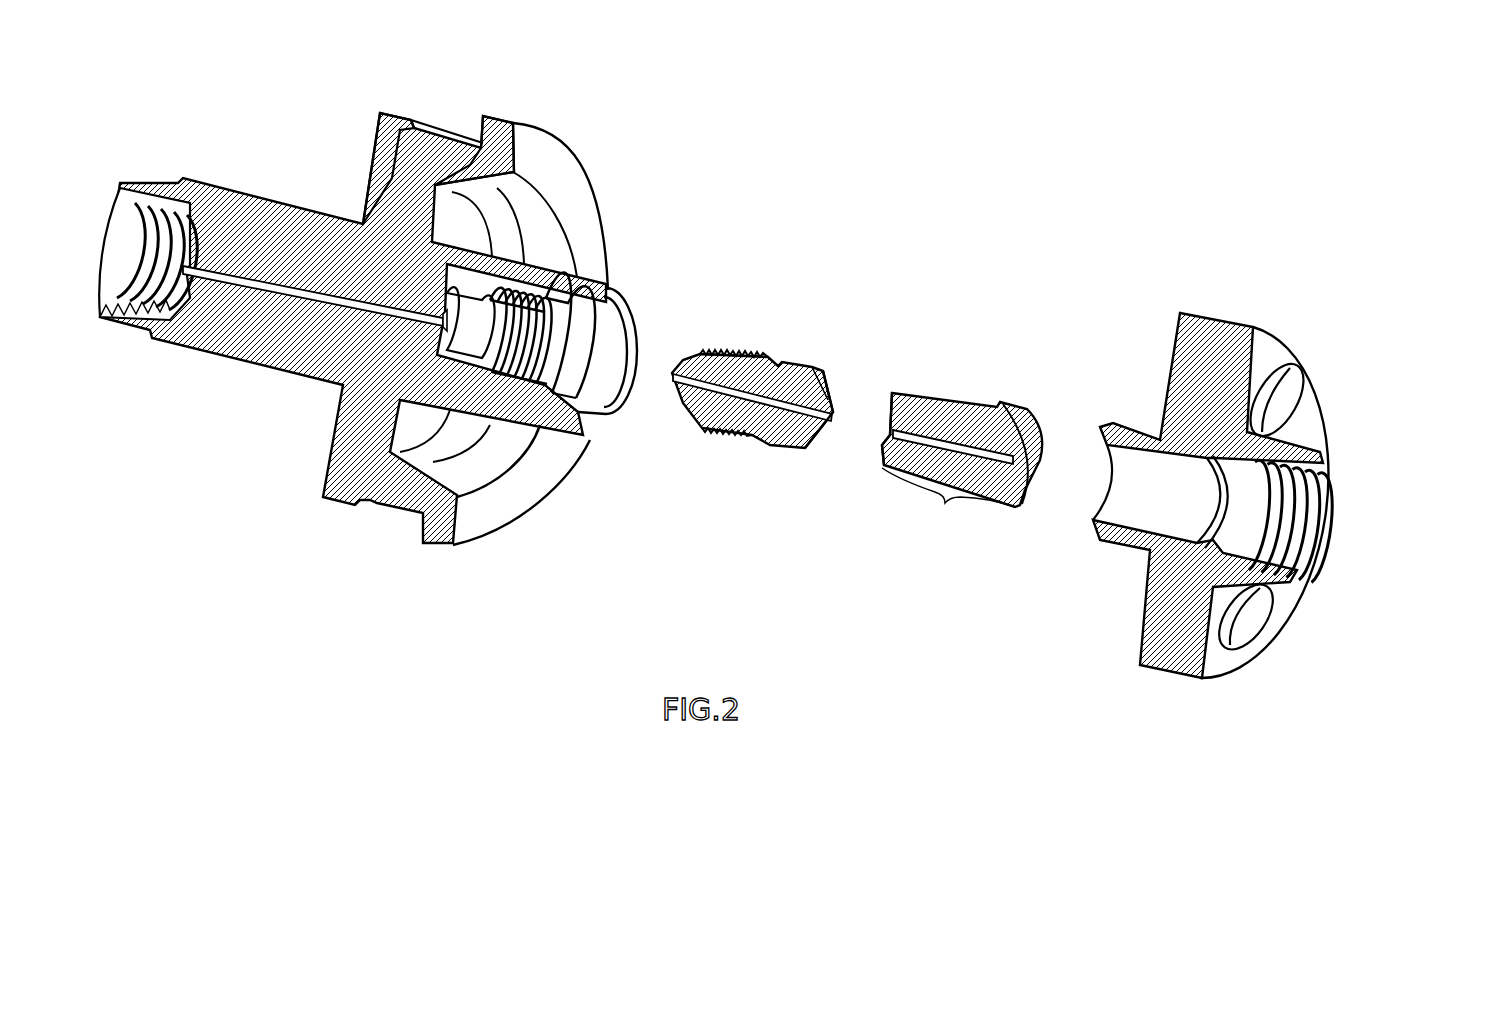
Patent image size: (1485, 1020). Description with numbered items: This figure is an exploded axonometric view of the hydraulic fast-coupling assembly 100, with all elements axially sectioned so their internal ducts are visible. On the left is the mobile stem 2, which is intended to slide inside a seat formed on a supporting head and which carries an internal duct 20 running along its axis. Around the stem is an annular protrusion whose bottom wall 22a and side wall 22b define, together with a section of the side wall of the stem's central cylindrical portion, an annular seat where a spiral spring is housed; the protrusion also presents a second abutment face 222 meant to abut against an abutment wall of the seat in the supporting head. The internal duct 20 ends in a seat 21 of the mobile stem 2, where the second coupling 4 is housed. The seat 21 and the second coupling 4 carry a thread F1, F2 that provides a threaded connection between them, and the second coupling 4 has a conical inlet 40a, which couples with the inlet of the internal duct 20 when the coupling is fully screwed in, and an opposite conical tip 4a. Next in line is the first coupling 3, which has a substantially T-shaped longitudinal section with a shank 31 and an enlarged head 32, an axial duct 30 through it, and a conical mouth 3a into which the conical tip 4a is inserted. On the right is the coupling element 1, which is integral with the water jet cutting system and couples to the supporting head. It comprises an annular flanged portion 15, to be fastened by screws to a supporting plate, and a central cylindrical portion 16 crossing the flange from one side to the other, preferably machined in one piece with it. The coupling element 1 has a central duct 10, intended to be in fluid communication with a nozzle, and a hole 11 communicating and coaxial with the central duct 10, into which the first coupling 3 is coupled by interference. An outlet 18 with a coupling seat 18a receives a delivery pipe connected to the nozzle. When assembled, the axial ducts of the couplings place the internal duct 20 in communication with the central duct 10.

The hydraulic fast-coupling assembly 100 is at (930, 212).
The coupling element 1 is at (1258, 473).
The central duct 10 is at (1317, 570).
The hole 11 is at (1148, 489).
The annular flanged portion 15 is at (1165, 563).
The central cylindrical portion 16 is at (1148, 332).
The outlet 18 is at (1330, 552).
The coupling seat 18a is at (1345, 498).
The mobile stem 2 is at (282, 422).
The internal duct 20 is at (296, 287).
The seat 21 is at (560, 373).
The bottom wall 22a is at (399, 183).
The side wall 22b is at (470, 168).
The second abutment face 222 is at (565, 176).
The first coupling 3 is at (967, 517).
The conical mouth 3a is at (891, 422).
The axial duct 30 is at (950, 437).
The shank 31 is at (948, 502).
The enlarged head 32 is at (1022, 437).
The second coupling 4 is at (733, 449).
The conical inlet 40a is at (671, 372).
The conical tip 4a is at (833, 431).
The thread F1 is at (752, 350).
The thread F2 is at (515, 382).